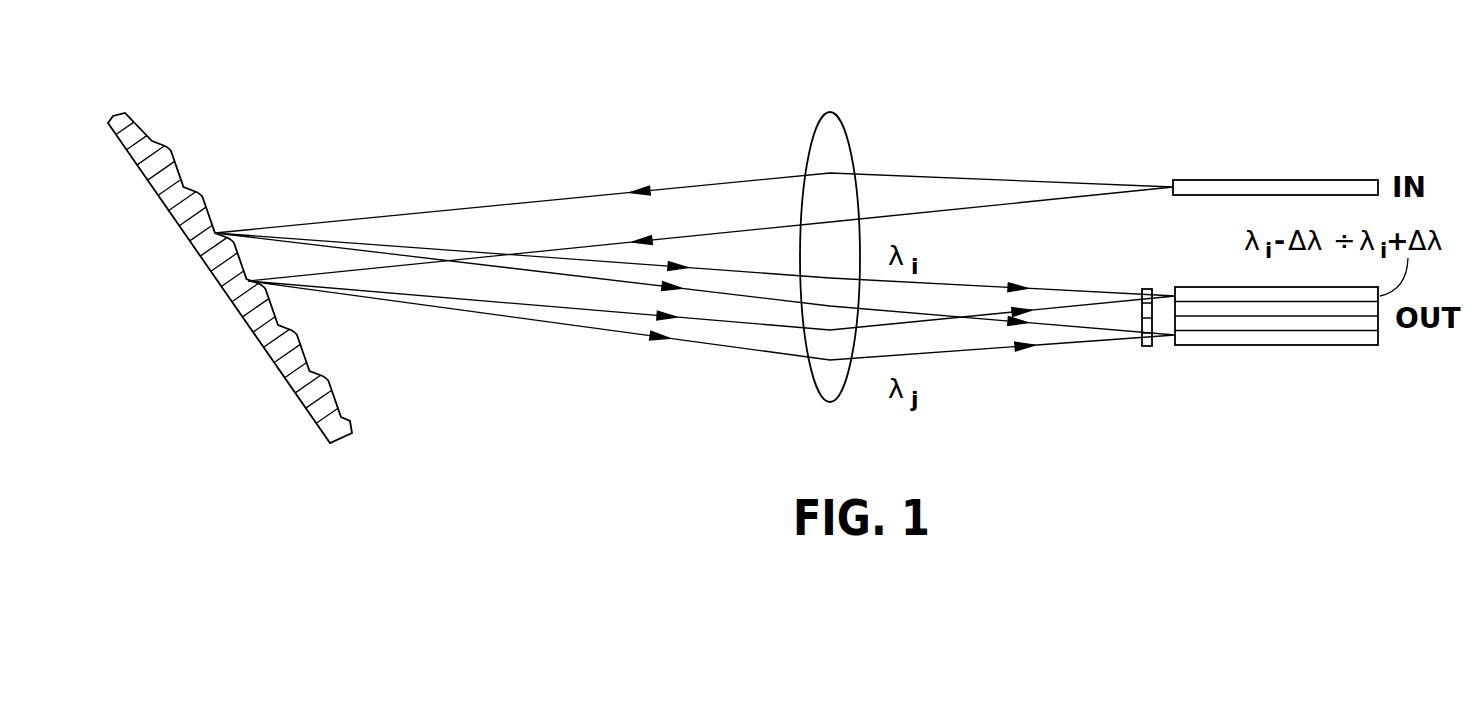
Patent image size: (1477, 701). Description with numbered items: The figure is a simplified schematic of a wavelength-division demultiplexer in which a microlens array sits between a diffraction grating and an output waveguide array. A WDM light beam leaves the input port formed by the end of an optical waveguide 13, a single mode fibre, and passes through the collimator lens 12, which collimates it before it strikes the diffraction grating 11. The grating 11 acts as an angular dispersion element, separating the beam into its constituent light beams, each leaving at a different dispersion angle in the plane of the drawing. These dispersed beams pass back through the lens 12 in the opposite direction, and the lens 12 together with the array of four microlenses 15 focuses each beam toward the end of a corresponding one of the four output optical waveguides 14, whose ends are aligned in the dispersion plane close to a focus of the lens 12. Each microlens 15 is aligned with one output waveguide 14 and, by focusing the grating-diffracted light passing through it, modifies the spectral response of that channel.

The diffraction grating 11 is at (158, 143).
The collimator lens 12 is at (830, 113).
The optical waveguide 13 is at (1252, 180).
The output optical waveguides 14 is at (1322, 345).
The microlenses 15 is at (1145, 347).